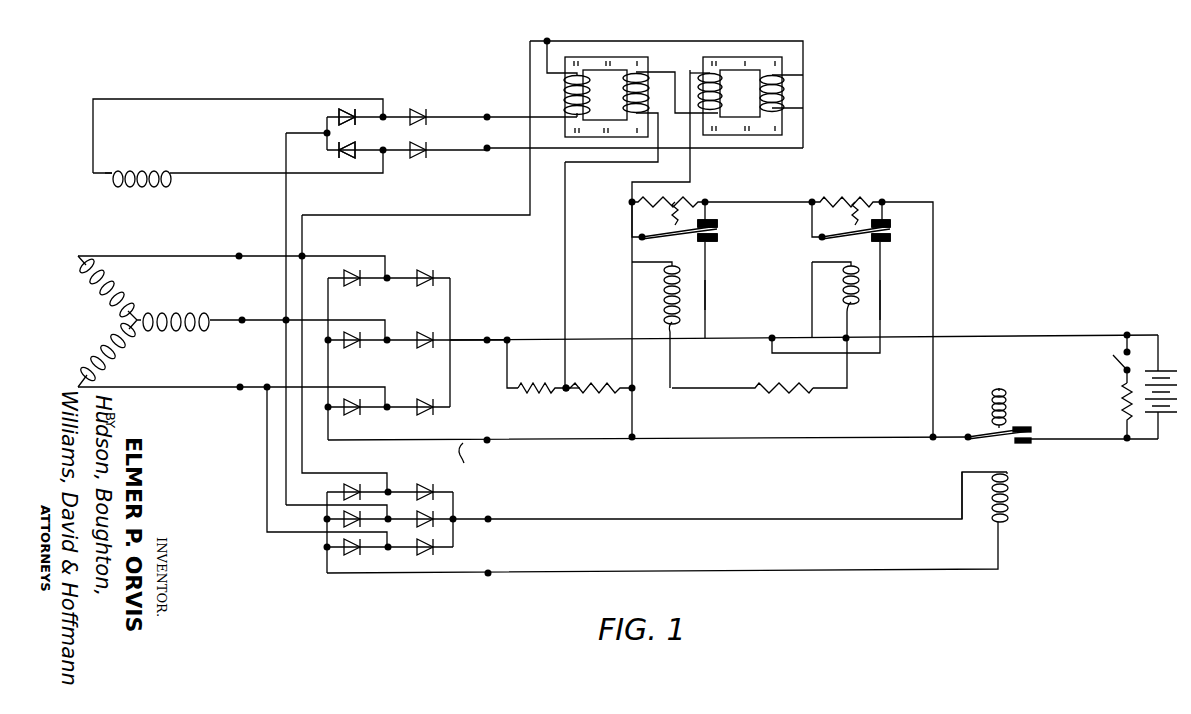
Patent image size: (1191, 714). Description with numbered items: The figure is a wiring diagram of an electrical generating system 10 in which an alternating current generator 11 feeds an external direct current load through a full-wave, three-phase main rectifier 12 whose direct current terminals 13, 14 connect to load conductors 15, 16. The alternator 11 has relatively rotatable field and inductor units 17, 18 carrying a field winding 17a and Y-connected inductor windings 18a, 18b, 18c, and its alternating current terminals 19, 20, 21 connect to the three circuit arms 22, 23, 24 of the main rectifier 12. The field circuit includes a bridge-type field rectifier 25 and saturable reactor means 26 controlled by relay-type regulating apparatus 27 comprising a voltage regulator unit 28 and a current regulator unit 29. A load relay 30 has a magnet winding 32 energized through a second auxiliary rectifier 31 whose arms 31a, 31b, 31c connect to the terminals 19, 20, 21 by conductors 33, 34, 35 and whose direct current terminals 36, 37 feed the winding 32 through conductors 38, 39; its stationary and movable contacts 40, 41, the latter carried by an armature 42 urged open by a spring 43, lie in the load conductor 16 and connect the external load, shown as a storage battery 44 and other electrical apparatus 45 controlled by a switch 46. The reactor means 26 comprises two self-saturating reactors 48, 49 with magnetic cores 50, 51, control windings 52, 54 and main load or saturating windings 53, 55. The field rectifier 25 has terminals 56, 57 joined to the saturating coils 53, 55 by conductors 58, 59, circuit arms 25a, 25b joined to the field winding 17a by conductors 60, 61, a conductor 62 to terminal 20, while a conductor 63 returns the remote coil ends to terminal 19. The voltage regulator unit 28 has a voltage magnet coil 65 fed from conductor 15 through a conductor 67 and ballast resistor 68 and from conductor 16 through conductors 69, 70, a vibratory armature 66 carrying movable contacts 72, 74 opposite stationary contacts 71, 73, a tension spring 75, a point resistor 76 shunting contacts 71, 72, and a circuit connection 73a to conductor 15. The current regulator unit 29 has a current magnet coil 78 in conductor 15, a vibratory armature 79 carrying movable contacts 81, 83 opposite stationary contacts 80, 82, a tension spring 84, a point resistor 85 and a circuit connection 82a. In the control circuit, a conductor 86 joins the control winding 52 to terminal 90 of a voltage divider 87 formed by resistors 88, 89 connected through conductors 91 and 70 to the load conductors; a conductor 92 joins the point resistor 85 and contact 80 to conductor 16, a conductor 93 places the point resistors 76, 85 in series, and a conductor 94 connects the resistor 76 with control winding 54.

The electrical generating system 10 is at (498, 473).
The alternating current generator 11 is at (182, 256).
The main rectifier 12 is at (394, 308).
The direct current terminal 13 is at (487, 339).
The direct current terminal 14 is at (487, 440).
The load conductor 15 is at (611, 339).
The load conductor 16 is at (602, 439).
The field unit 17 is at (158, 157).
The field winding 17a is at (133, 185).
The inductor unit 18 is at (194, 306).
The inductor winding 18a is at (116, 293).
The inductor winding 18b is at (190, 331).
The inductor winding 18c is at (127, 351).
The alternating current terminal 19 is at (242, 255).
The alternating current terminal 20 is at (247, 318).
The alternating current terminal 21 is at (249, 385).
The circuit arm 22 is at (403, 274).
The circuit arm 23 is at (405, 337).
The circuit arm 24 is at (402, 400).
The field rectifier 25 is at (391, 143).
The circuit arm 25a is at (383, 112).
The circuit arm 25b is at (380, 155).
The saturable reactor means 26 is at (672, 34).
The regulating apparatus 27 is at (766, 236).
The voltage regulator unit 28 is at (704, 243).
The current regulator unit 29 is at (858, 259).
The load relay 30 is at (1046, 473).
The second auxiliary rectifier 31 is at (413, 571).
The circuit arm 31a is at (404, 490).
The circuit arm 31b is at (405, 514).
The circuit arm 31c is at (405, 541).
The magnet winding 32 is at (1038, 500).
The conductor 33 is at (303, 466).
The conductor 34 is at (287, 495).
The conductor 35 is at (267, 493).
The direct current terminal 36 is at (492, 519).
The direct current terminal 37 is at (492, 573).
The conductor 38 is at (670, 519).
The conductor 39 is at (670, 572).
The stationary switch contact 40 is at (1011, 444).
The movable switch contact 41 is at (1032, 429).
The armature 42 is at (1015, 426).
The spring 43 is at (1001, 393).
The storage battery 44 is at (1163, 418).
The electrical apparatus 45 is at (1117, 401).
The switch 46 is at (1112, 363).
The self-saturating reactor 48 is at (616, 104).
The self-saturating reactor 49 is at (750, 103).
The magnetic core 50 is at (604, 60).
The magnetic core 51 is at (752, 62).
The control winding 52 is at (653, 84).
The main load winding 53 is at (565, 96).
The control winding 54 is at (719, 72).
The main load winding 55 is at (786, 93).
The terminal 56 is at (485, 115).
The terminal 57 is at (486, 150).
The conductor 58 is at (523, 115).
The conductor 59 is at (523, 153).
The conductor 60 is at (306, 84).
The conductor 61 is at (267, 172).
The conductor 62 is at (285, 192).
The conductor 63 is at (471, 216).
The voltage magnet coil 65 is at (666, 298).
The vibratory armature 66 is at (684, 238).
The conductor 67 is at (835, 391).
The ballast resistor 68 is at (786, 388).
The conductor 69 is at (633, 368).
The conductor 70 is at (634, 404).
The stationary contact 71 is at (714, 222).
The movable contact 72 is at (716, 228).
The stationary contact 73 is at (712, 253).
The circuit connection 73a is at (707, 298).
The movable contact 74 is at (720, 242).
The tension spring 75 is at (672, 218).
The point resistor 76 is at (664, 195).
The current magnet coil 78 is at (844, 292).
The vibratory armature 79 is at (822, 238).
The stationary contact 80 is at (883, 222).
The movable contact 81 is at (890, 224).
The stationary contact 82 is at (880, 245).
The circuit connection 82a is at (883, 300).
The movable contact 83 is at (890, 232).
The tension spring 84 is at (852, 218).
The point resistor 85 is at (861, 202).
The conductor 86 is at (565, 245).
The voltage divider 87 is at (558, 393).
The resistor 88 is at (550, 383).
The resistor 89 is at (614, 385).
The terminal 90 is at (573, 391).
The conductor 91 is at (507, 370).
The conductor 92 is at (936, 305).
The conductor 93 is at (783, 201).
The conductor 94 is at (692, 173).